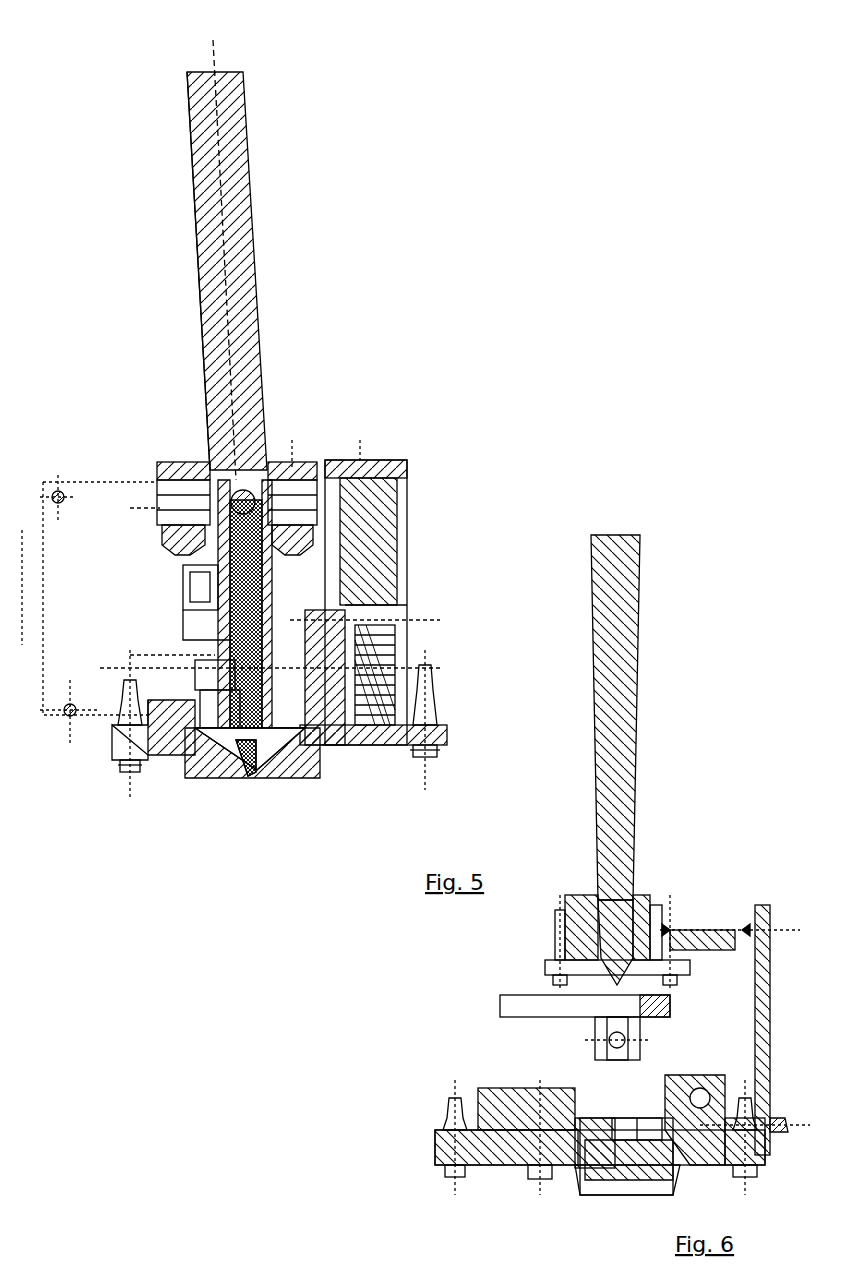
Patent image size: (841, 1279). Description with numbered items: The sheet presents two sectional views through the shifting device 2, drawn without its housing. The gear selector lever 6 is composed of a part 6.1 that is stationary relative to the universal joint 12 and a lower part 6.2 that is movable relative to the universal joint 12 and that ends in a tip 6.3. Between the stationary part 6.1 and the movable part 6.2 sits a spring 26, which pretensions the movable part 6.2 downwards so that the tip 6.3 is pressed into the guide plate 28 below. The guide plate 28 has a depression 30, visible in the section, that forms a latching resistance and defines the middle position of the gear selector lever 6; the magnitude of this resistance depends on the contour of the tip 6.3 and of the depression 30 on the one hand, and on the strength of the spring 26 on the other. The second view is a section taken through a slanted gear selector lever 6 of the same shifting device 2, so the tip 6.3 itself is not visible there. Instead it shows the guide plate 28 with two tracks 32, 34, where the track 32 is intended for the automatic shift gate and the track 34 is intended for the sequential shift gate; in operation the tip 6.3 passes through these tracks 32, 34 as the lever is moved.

In FIG. 5, the shifting device 2 is at (375, 297).
In FIG. 6, the shifting device 2 is at (693, 640).
In FIG. 5, the gear selector lever 6 is at (262, 130).
In FIG. 6, the gear selector lever 6 is at (622, 768).
In FIG. 5, the stationary part 6.1 is at (212, 155).
In FIG. 5, the movable part 6.2 is at (195, 663).
In FIG. 5, the tip 6.3 is at (186, 777).
In FIG. 5, the universal joint 12 is at (280, 462).
In FIG. 5, the spring 26 is at (245, 638).
In FIG. 5, the guide plate 28 is at (330, 776).
In FIG. 6, the guide plate 28 is at (628, 1185).
In FIG. 5, the depression 30 is at (262, 776).
In FIG. 6, the track 32 is at (612, 1140).
In FIG. 6, the track 34 is at (662, 1135).